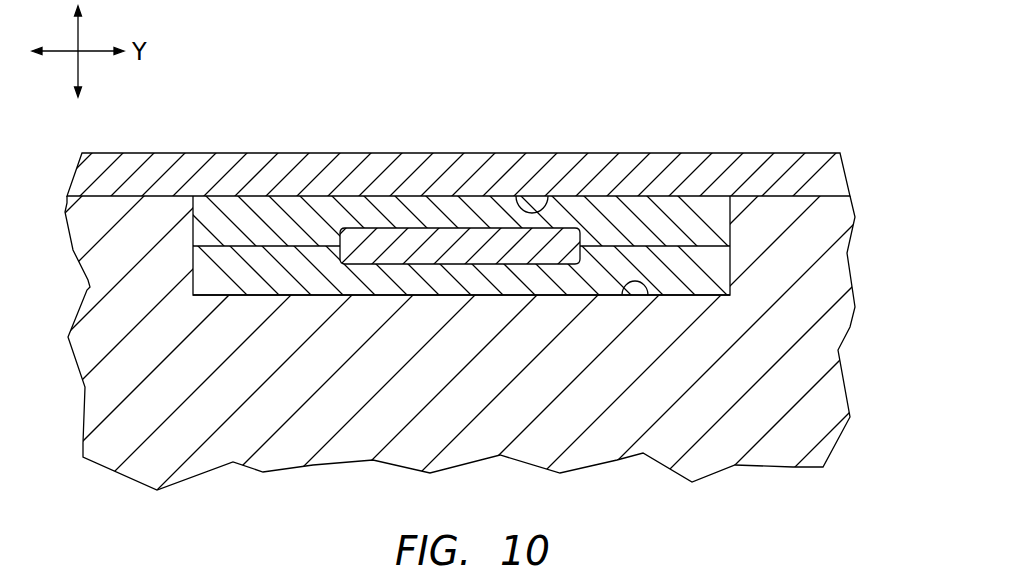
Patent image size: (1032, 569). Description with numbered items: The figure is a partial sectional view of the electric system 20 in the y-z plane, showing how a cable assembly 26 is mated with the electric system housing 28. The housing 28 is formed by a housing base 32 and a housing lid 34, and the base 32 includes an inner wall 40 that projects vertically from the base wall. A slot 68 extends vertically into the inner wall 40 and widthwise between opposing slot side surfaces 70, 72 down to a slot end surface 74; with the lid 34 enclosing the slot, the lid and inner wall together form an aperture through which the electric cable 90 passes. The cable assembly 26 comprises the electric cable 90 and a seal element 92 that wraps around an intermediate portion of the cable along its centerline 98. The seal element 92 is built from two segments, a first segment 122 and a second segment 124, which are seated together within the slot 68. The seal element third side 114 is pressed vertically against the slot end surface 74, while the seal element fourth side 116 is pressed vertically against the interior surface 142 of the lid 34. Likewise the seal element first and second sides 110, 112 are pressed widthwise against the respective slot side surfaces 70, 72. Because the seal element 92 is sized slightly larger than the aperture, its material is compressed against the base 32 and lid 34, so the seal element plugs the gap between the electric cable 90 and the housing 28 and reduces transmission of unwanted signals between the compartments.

The electric system 20 is at (786, 73).
The cable assembly 26 is at (389, 185).
The electric system housing 28 is at (836, 137).
The housing base 32 is at (866, 278).
The housing lid 34 is at (860, 176).
The inner wall 40 is at (850, 327).
The slot 68 is at (453, 343).
The slot side surface 70 is at (198, 212).
The slot side surface 72 is at (730, 212).
The slot end surface 74 is at (647, 297).
The electric cable 90 is at (471, 212).
The seal element 92 is at (379, 307).
The centerline 98 is at (462, 254).
The seal element first side 110 is at (192, 265).
The seal element second side 112 is at (732, 272).
The seal element third side 114 is at (289, 298).
The seal element fourth side 116 is at (290, 196).
The seal element first segment 122 is at (580, 307).
The seal element second segment 124 is at (606, 185).
The interior surface 142 is at (543, 197).